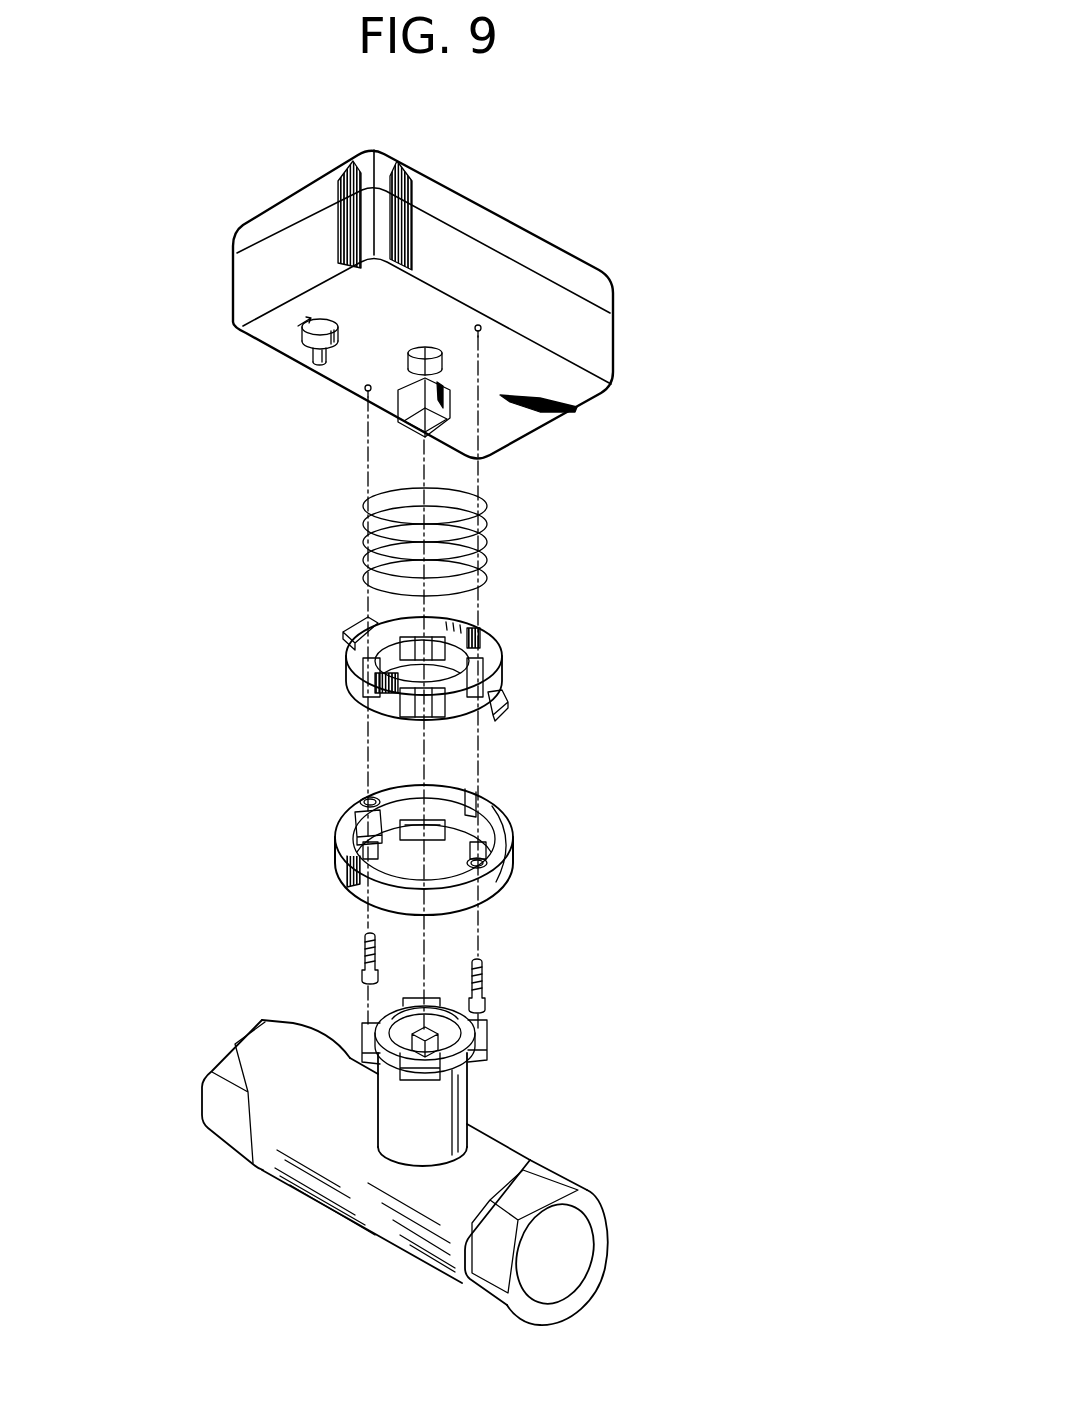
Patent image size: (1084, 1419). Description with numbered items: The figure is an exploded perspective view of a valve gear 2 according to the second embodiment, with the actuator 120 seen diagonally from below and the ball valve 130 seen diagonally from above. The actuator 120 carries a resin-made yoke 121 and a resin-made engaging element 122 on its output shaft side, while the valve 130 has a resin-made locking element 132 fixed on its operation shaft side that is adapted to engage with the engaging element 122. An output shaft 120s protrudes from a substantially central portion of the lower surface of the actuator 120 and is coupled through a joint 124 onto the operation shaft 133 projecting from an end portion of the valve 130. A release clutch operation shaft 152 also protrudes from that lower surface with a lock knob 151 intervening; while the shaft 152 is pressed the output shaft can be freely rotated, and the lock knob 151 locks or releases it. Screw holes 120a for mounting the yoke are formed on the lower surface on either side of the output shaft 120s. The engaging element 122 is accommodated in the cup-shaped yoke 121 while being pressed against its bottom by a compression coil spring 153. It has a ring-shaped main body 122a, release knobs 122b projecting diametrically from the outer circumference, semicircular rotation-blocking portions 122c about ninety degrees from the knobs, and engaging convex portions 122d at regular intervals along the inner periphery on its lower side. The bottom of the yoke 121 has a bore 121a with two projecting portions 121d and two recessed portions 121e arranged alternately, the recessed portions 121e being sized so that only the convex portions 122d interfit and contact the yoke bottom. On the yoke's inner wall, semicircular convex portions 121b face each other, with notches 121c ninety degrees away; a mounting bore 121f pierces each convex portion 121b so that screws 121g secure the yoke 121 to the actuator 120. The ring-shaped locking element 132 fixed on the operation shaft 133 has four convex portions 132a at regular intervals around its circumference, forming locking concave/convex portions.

The valve gear 2 is at (718, 686).
The actuator 120 is at (640, 330).
The screw holes 120a is at (478, 324).
The output shaft 120s is at (426, 346).
The joint 124 is at (448, 411).
The lock knob 151 is at (308, 348).
The release clutch operation shaft 152 is at (316, 377).
The compression coil spring 153 is at (363, 530).
The engaging element 122 is at (503, 650).
The ring-shaped main body 122a is at (347, 687).
The release knobs 122b is at (345, 623).
The rotation-blocking portions 122c is at (477, 627).
The engaging convex portions 122d is at (362, 673).
The yoke 121 is at (512, 840).
The bore 121a is at (340, 843).
The convex portions 121b is at (370, 797).
The notches 121c is at (483, 813).
The projecting portions 121d is at (357, 823).
The recessed portions 121e is at (362, 858).
The mounting bore 121f is at (367, 802).
The screws 121g is at (362, 964).
The locking element 132 is at (483, 1023).
The convex portions 132a is at (403, 1003).
The operation shaft 133 is at (430, 1063).
The ball valve 130 is at (433, 1240).